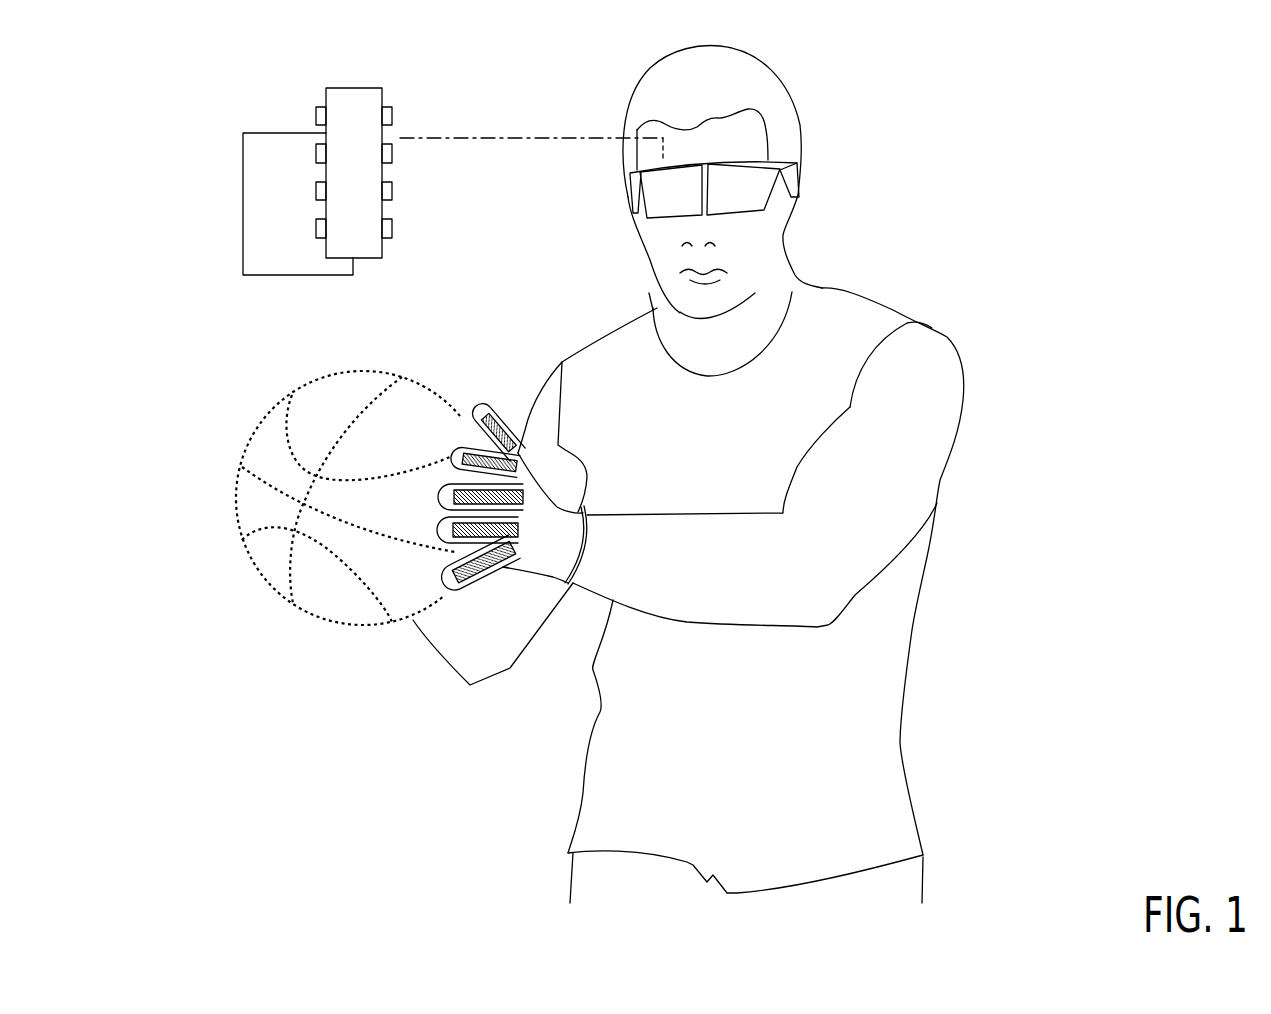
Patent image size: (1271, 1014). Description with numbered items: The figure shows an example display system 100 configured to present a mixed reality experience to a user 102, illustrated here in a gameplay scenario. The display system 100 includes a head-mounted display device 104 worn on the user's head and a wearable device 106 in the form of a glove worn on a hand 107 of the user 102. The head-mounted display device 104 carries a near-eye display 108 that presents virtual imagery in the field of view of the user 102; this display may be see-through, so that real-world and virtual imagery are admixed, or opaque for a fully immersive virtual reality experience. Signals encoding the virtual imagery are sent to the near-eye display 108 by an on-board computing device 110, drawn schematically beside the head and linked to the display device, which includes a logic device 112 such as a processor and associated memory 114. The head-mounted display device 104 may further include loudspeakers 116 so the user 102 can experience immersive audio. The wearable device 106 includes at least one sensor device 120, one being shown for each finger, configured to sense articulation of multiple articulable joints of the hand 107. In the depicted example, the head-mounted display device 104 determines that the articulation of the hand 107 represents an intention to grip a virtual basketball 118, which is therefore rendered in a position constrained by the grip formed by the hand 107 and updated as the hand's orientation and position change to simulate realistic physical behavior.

The display system 100 is at (175, 347).
The user 102 is at (830, 818).
The head-mounted display (HMD) device 104 is at (600, 192).
The wearable device 106 is at (574, 543).
The hand 107 is at (558, 538).
The near-eye display 108 is at (685, 210).
The on-board computing device 110 is at (231, 95).
The logic device 112 is at (285, 276).
The memory 114 is at (352, 88).
The loudspeakers 116 is at (800, 177).
The virtual basketball 118 is at (400, 577).
The sensor device 120 is at (470, 580).